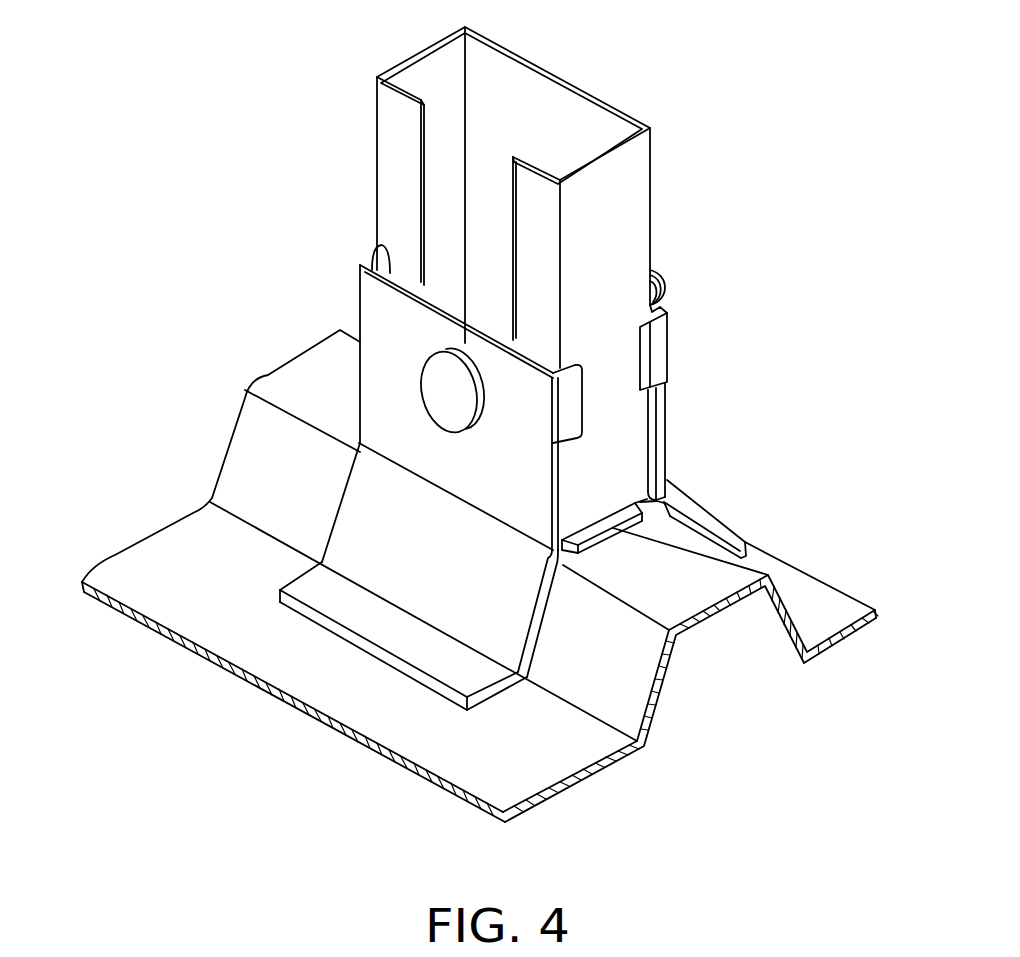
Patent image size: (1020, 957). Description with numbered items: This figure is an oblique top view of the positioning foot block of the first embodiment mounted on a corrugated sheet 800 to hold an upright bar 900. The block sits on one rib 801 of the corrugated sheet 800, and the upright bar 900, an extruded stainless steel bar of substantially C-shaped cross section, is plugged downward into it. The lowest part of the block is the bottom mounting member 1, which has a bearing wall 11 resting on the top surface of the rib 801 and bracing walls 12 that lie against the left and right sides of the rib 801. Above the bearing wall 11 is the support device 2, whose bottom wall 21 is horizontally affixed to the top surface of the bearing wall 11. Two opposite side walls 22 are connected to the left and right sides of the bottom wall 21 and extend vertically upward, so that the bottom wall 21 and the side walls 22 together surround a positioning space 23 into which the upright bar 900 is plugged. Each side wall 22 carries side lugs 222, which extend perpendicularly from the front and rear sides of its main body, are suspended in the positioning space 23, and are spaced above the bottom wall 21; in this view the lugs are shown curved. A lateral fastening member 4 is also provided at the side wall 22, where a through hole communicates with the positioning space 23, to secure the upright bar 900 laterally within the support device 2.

The upright bar 900 is at (602, 100).
The bottom mounting member 1 is at (547, 594).
The bearing wall 11 is at (615, 528).
The bracing wall 12 is at (517, 605).
The support device 2 is at (562, 354).
The bottom wall 21 is at (615, 513).
The side wall 22 is at (380, 317).
The side lug 222 is at (662, 337).
The positioning space 23 is at (388, 272).
The lateral fastening member 4 is at (440, 393).
The corrugated sheet 800 is at (474, 576).
The rib 801 is at (277, 468).